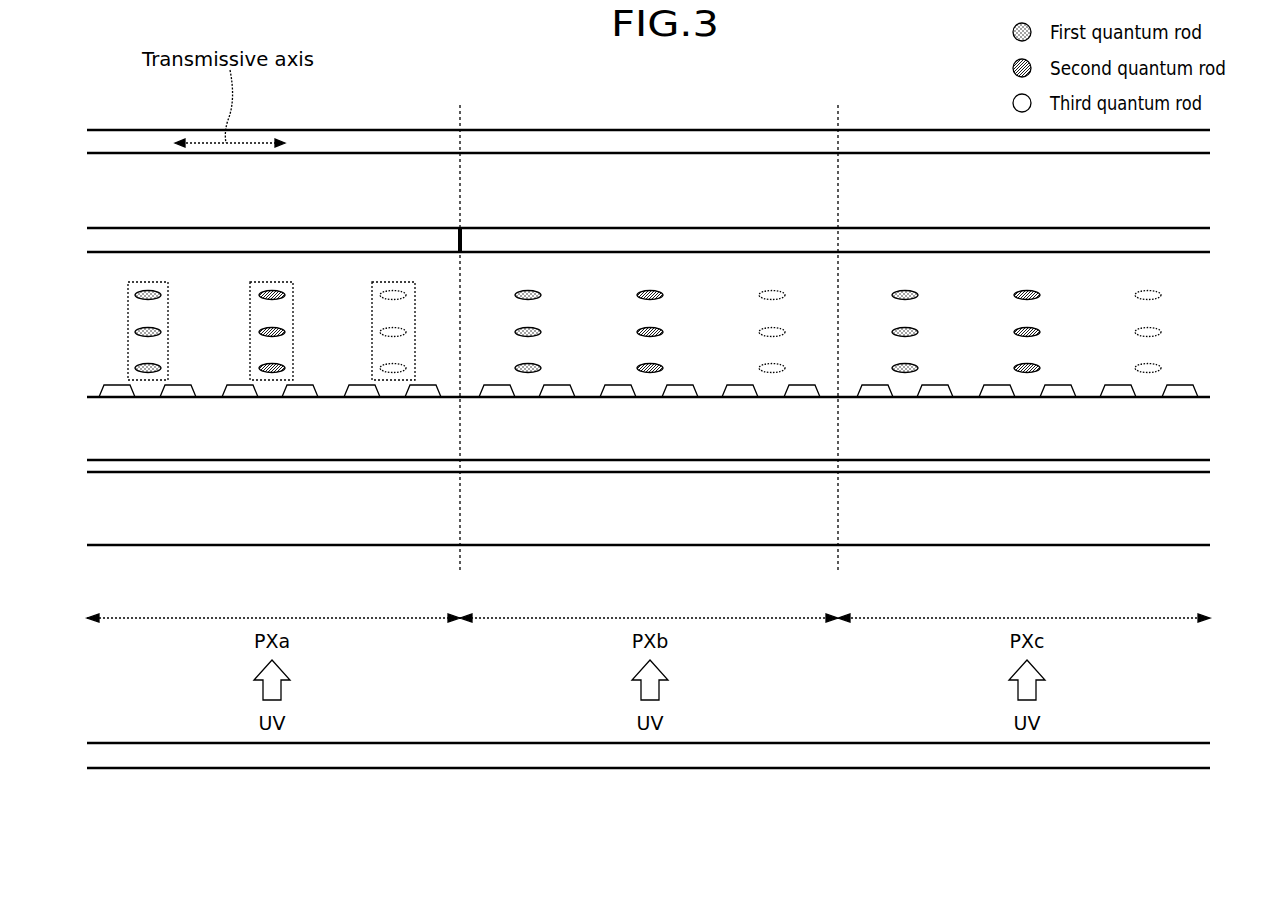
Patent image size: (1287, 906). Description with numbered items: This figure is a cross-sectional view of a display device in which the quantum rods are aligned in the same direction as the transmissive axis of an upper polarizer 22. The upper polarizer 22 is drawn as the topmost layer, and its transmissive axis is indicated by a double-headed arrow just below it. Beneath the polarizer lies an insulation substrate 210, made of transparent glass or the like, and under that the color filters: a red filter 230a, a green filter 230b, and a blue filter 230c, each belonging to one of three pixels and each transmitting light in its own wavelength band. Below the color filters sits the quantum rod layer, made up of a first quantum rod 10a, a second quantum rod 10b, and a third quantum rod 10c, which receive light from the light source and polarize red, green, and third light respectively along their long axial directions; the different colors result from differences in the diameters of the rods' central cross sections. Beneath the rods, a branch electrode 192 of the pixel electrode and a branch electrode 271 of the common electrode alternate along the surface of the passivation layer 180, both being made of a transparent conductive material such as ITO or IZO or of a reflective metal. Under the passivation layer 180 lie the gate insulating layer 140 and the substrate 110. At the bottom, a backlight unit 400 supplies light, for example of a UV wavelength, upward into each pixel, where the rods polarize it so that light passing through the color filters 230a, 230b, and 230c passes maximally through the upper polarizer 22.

The upper polarizer 22 is at (133, 145).
The insulation substrate 210 is at (726, 182).
The red filter 230a is at (338, 240).
The green filter 230b is at (603, 240).
The blue filter 230c is at (950, 240).
The first quantum rod 10a is at (128, 296).
The second quantum rod 10b is at (250, 296).
The third quantum rod 10c is at (372, 296).
The branch electrode of the pixel electrode 192 is at (116, 400).
The branch electrode of the common electrode 271 is at (185, 386).
The passivation layer 180 is at (935, 432).
The gate insulating layer 140 is at (1036, 472).
The substrate 110 is at (1119, 518).
The backlight unit 400 is at (1200, 752).